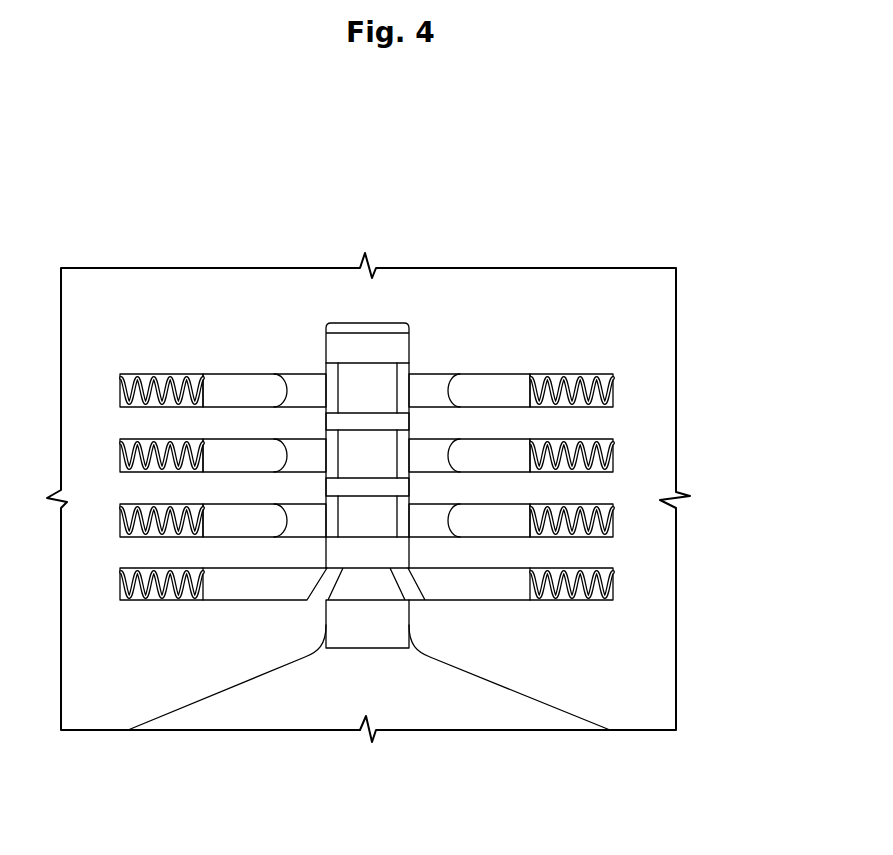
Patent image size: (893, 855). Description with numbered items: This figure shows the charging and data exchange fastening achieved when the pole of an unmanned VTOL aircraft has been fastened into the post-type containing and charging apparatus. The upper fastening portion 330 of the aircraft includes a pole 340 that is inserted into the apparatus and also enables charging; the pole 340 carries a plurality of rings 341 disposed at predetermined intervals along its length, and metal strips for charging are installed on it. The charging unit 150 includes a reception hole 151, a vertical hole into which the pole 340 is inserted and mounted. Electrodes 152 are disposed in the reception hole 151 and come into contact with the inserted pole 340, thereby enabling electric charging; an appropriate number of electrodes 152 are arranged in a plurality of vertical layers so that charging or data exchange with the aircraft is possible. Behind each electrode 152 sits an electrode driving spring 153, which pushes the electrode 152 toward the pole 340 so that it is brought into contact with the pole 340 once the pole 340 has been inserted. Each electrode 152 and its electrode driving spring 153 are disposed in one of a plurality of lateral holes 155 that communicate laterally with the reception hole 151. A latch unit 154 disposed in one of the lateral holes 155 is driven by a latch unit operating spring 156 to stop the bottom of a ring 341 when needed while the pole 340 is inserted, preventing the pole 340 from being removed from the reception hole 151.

The charging unit 150 is at (475, 286).
The reception hole 151 is at (328, 557).
The electrode 152 is at (507, 383).
The electrode driving spring 153 is at (588, 375).
The latch unit 154 is at (488, 582).
The lateral hole 155 is at (305, 388).
The latch unit operating spring 156 is at (613, 583).
The upper fastening portion 330 is at (450, 705).
The pole 340 is at (377, 522).
The ring 341 is at (368, 487).